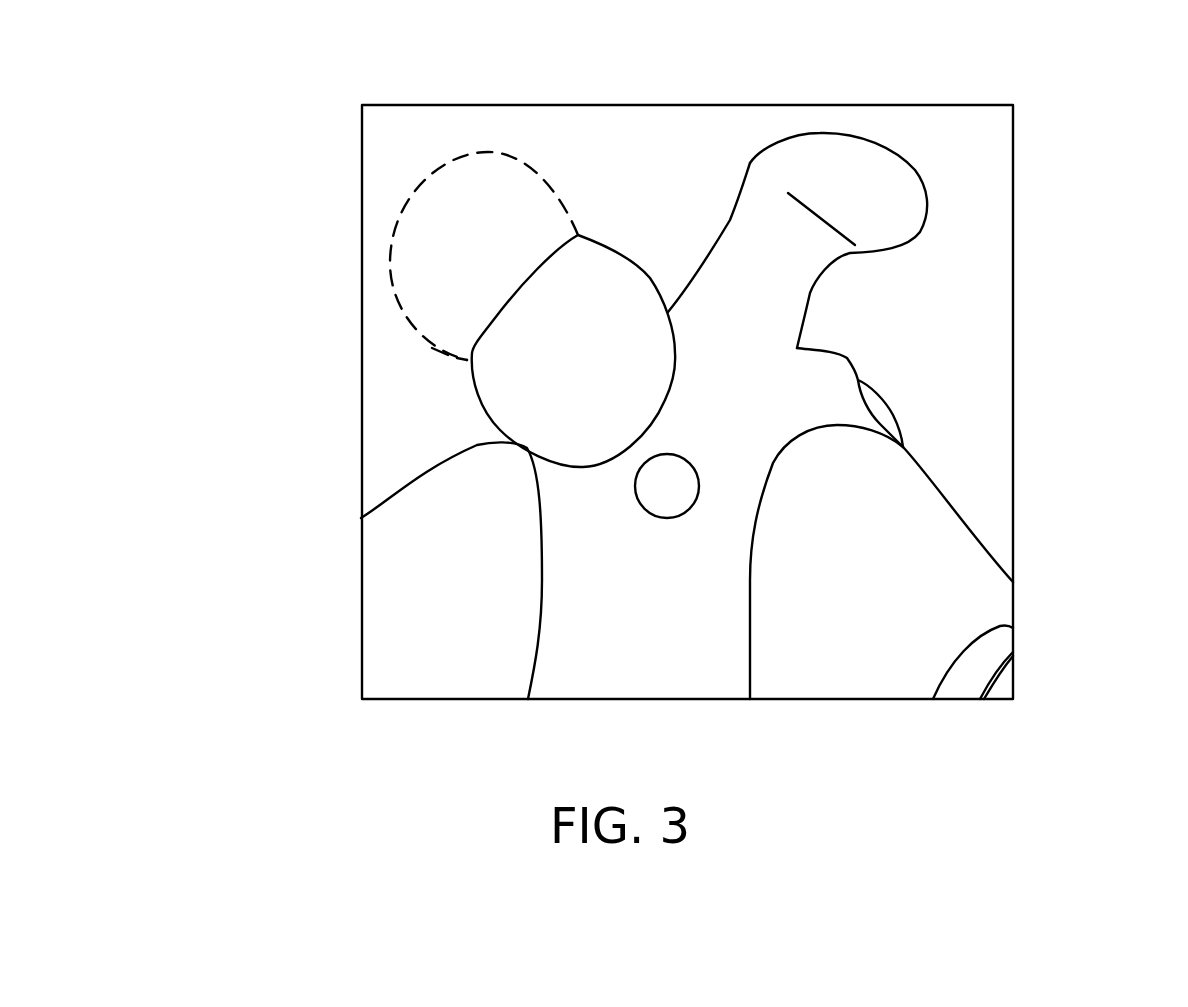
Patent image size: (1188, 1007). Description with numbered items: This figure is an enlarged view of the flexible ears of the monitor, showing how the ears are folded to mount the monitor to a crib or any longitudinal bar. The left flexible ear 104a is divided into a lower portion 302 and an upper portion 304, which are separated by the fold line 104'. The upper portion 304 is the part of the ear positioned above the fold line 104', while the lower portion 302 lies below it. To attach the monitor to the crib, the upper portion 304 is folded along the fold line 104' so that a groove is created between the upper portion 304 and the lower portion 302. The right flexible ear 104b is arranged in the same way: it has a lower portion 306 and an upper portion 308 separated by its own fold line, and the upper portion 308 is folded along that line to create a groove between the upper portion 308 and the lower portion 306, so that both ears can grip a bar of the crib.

The fold line 104' is at (699, 177).
The left flexible ear 104a is at (900, 165).
The right flexible ear 104b is at (361, 518).
The lower portion 302 is at (763, 282).
The upper portion 304 is at (880, 218).
The lower portion 306 is at (493, 407).
The upper portion 308 is at (423, 232).